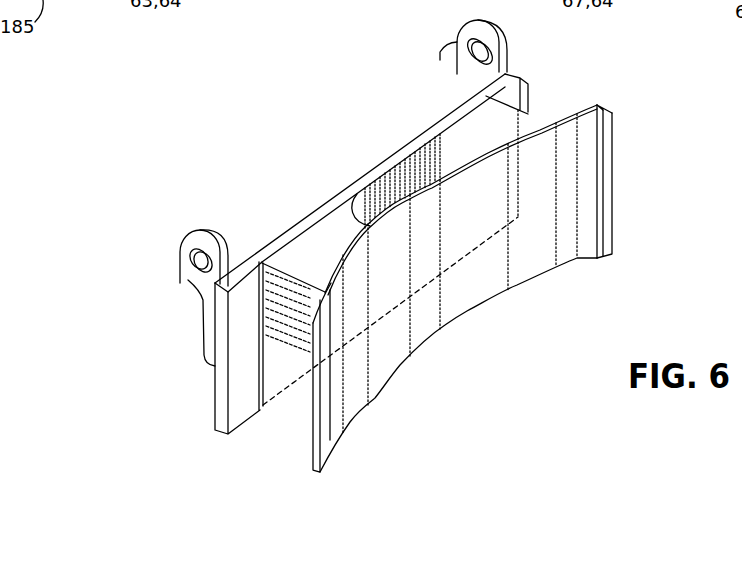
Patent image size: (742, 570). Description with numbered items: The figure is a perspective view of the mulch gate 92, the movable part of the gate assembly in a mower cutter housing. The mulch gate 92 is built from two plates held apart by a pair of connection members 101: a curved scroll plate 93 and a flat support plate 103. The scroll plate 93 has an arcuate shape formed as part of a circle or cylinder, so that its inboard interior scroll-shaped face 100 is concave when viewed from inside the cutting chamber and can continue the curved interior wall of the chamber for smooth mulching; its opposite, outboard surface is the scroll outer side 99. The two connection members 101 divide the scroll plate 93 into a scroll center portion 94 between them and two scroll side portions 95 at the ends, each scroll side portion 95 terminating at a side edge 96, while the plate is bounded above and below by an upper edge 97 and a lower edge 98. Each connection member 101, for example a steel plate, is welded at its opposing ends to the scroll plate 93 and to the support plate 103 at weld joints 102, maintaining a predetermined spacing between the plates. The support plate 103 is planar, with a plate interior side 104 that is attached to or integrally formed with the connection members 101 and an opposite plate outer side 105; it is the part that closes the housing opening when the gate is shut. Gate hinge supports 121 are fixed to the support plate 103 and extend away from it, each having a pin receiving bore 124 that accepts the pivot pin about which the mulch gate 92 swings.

The mulch gate 92 is at (176, 338).
The scroll plate 93 is at (425, 328).
The scroll center portion 94 is at (440, 207).
The scroll side portions 95 is at (334, 432).
The side edges 96 is at (312, 445).
The upper edge 97 is at (597, 105).
The lower edge 98 is at (518, 288).
The scroll outer side 99 is at (356, 196).
The interior scroll-shaped face 100 is at (453, 288).
The connection members 101 is at (287, 407).
The weld joints 102 is at (258, 372).
The support plate 103 is at (368, 172).
The plate interior side 104 is at (297, 224).
The plate outer side 105 is at (303, 221).
The gate hinge supports 121 is at (178, 250).
The pin receiving bore 124 is at (190, 271).